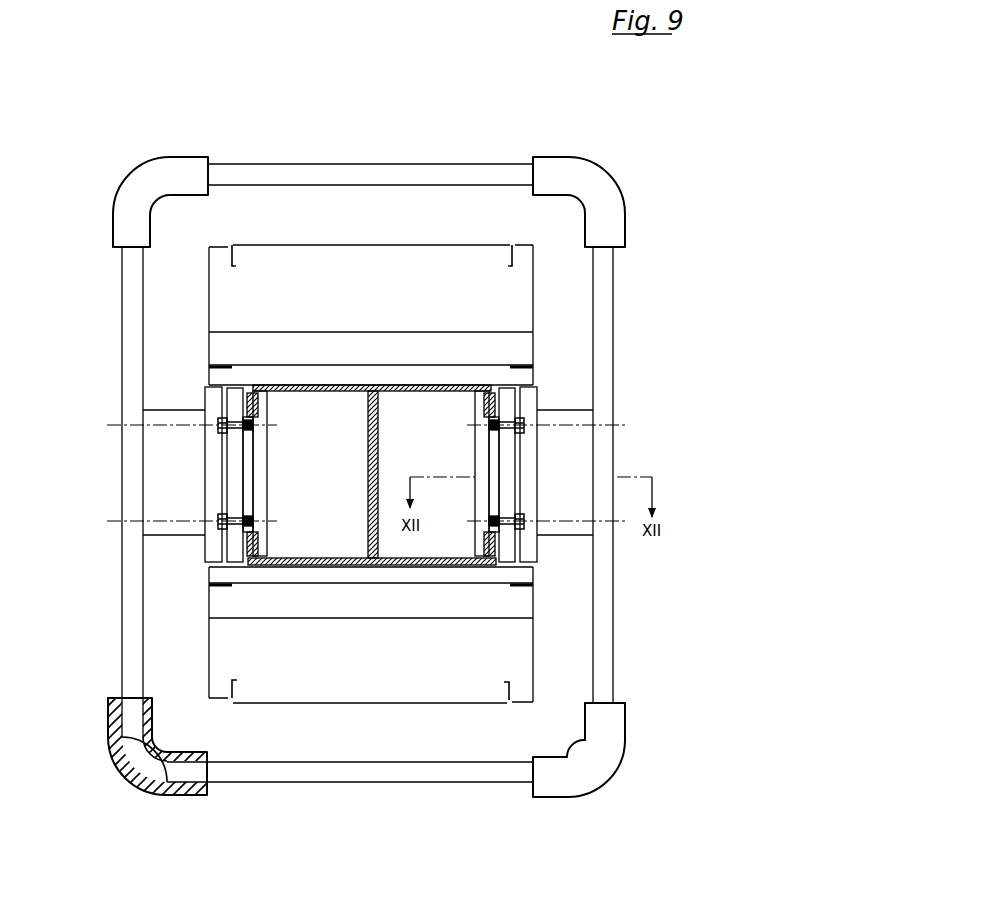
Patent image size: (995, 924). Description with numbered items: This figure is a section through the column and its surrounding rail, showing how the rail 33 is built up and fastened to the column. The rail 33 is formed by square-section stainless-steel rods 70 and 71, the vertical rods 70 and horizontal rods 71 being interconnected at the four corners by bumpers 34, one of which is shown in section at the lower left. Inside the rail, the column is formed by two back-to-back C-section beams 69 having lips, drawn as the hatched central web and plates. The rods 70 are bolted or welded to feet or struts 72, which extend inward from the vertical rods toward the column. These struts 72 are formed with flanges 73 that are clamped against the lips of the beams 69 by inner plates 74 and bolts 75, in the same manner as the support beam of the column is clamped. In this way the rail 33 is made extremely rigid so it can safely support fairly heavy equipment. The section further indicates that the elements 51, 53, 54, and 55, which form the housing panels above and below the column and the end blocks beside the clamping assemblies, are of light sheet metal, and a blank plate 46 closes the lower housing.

The rail 33 is at (367, 483).
The bumper 34 is at (580, 173).
The blank plate 46 is at (310, 697).
The element of light sheet metal 51 is at (417, 245).
The element of light sheet metal 53 is at (207, 545).
The element of light sheet metal 54 is at (448, 484).
The element of light sheet metal 55 is at (533, 377).
The C-section beam 69 is at (305, 565).
The square-section stainless-steel rod 70 is at (133, 380).
The square-section stainless-steel rod 71 is at (368, 173).
The foot or strut 72 is at (153, 440).
The flange 73 is at (235, 460).
The inner plate 74 is at (262, 467).
The bolt 75 is at (255, 513).